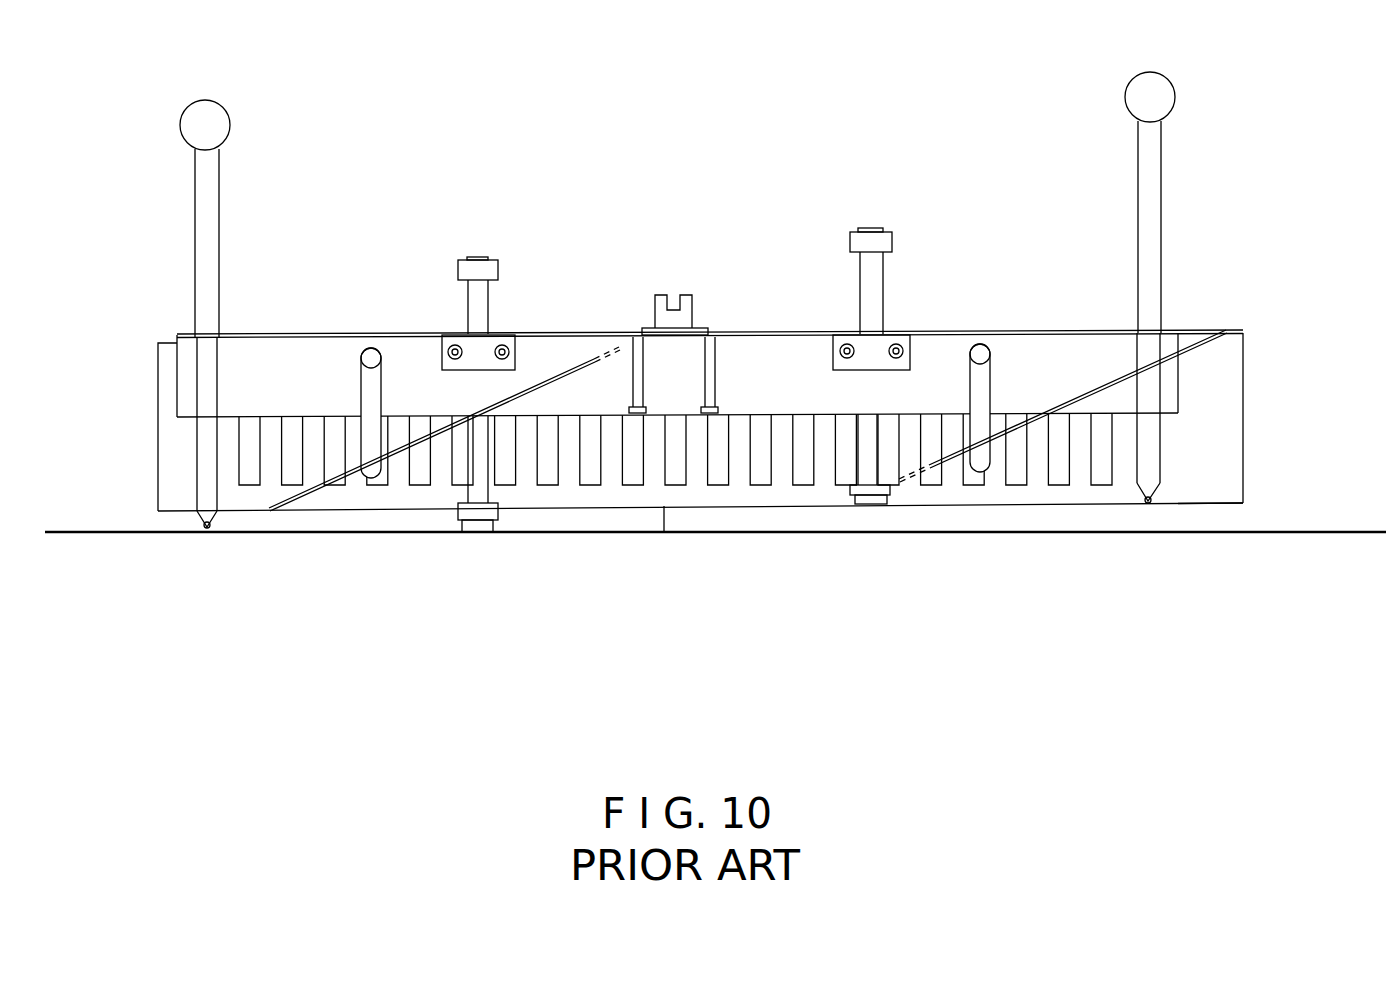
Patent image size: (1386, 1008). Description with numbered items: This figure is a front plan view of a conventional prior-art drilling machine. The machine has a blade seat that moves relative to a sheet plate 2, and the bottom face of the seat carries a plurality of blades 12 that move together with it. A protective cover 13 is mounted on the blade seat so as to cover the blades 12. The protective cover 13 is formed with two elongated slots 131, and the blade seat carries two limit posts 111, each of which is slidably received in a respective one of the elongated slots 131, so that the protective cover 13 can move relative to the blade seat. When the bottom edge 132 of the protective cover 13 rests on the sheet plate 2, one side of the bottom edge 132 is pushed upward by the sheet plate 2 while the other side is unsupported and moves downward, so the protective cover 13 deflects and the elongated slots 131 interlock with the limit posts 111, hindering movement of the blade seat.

The sheet plate 2 is at (1165, 540).
The blades 12 is at (1107, 450).
The protective cover 13 is at (768, 493).
The limit posts 111 is at (370, 352).
The elongated slots 131 is at (362, 390).
The bottom edge 132 is at (1217, 505).